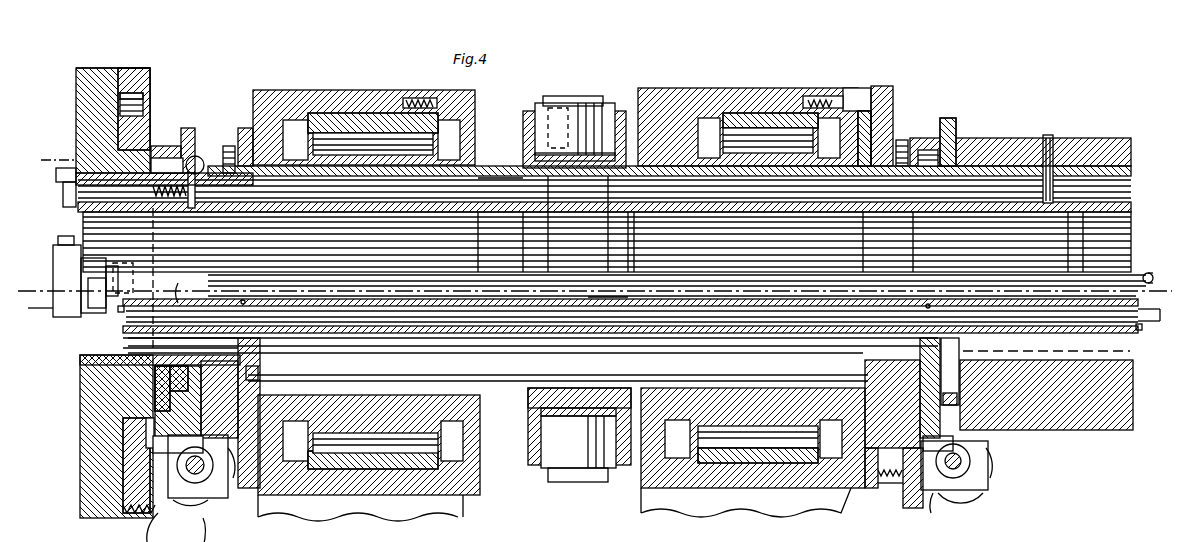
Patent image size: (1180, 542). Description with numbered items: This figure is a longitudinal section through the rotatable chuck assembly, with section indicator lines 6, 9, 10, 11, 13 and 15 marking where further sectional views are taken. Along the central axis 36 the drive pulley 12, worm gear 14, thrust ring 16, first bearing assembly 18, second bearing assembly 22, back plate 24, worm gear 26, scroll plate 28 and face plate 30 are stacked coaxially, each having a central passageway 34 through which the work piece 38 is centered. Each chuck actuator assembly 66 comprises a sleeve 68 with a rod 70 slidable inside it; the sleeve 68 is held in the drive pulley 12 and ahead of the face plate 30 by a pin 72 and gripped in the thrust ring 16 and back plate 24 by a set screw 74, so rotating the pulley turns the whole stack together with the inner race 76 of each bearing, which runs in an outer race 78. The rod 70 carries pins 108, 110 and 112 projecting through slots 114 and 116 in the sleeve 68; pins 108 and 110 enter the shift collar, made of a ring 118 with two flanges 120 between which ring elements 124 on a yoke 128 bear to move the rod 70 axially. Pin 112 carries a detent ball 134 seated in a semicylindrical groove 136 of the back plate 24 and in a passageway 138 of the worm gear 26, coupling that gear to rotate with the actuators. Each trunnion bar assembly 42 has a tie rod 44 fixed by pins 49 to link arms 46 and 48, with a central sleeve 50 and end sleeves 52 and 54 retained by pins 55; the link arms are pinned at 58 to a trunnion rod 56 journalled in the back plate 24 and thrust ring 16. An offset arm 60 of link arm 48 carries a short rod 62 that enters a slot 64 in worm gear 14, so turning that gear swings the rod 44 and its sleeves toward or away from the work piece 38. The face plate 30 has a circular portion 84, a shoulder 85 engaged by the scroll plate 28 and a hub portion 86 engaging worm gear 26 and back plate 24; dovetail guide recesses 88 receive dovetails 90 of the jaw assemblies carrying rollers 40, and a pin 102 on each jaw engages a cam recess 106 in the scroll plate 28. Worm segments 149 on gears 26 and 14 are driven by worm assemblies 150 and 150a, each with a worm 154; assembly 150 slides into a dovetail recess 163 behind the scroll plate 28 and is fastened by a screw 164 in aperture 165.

The section line 6 is at (45, 150).
The section line 9 is at (125, 46).
The section line 10 is at (168, 107).
The section line 11 is at (205, 73).
The drive pulley 12 is at (248, 103).
The section line 13 is at (526, 82).
The worm gear 14 is at (868, 58).
The section line 15 is at (925, 103).
The thrust ring 16 is at (872, 78).
The first bearing assembly 18 is at (768, 82).
The second bearing assembly 22 is at (345, 82).
The back plate 24 is at (249, 413).
The worm gear 26 is at (180, 405).
The scroll plate 28 is at (120, 60).
The face plate 30 is at (68, 60).
The central passageway 34 is at (676, 245).
The central axis 36 is at (1172, 262).
The work piece 38 is at (410, 268).
The roller or jaw 40 is at (33, 270).
The trunnion bar assembly 42 is at (692, 290).
The tie bar or rod 44 is at (1140, 299).
The link arm 46 is at (235, 335).
The link arm 48 is at (925, 280).
The pins 49 is at (230, 292).
The sleeve 50 is at (605, 268).
The sleeve 52 is at (190, 292).
The sleeve 54 is at (1008, 322).
The pins 55 is at (1135, 319).
The trunnion rod 56 is at (306, 366).
The pin 58 is at (250, 364).
The offset arm 60 is at (912, 400).
The short rod 62 is at (968, 390).
The recess or slot 64 is at (952, 378).
The actuator assembly 66 is at (798, 212).
The sleeve 68 is at (1123, 165).
The rod 70 is at (512, 205).
The pin 72 is at (68, 210).
The set screw 74 is at (222, 138).
The inner race 76 is at (350, 440).
The outer race 78 is at (378, 105).
The circular portion 84 is at (68, 83).
The shoulder 85 is at (118, 175).
The hub portion 86 is at (185, 212).
The dovetail guide recess 88 is at (95, 300).
The dovetail 90 is at (85, 270).
The pin or roller 102 is at (125, 283).
The scroll or cam recess 106 is at (130, 84).
The pin 108 is at (598, 205).
The pin 110 is at (545, 205).
The pin 112 is at (180, 212).
The slot 114 is at (492, 170).
The slot 116 is at (148, 177).
The ring 118 is at (535, 390).
The flanges 120 is at (518, 118).
The ring elements 124 is at (600, 110).
The yoke 128 is at (568, 88).
The detent ball 134 is at (182, 120).
The semicylindrical groove 136 is at (188, 148).
The passageway 138 is at (160, 157).
The worm segment 149 is at (178, 440).
The worm assembly 150 is at (205, 470).
The worm assembly 150a is at (982, 470).
The worm 154 is at (205, 510).
The dovetail recess 163 is at (140, 432).
The screw 164 is at (555, 517).
The aperture 165 is at (115, 500).